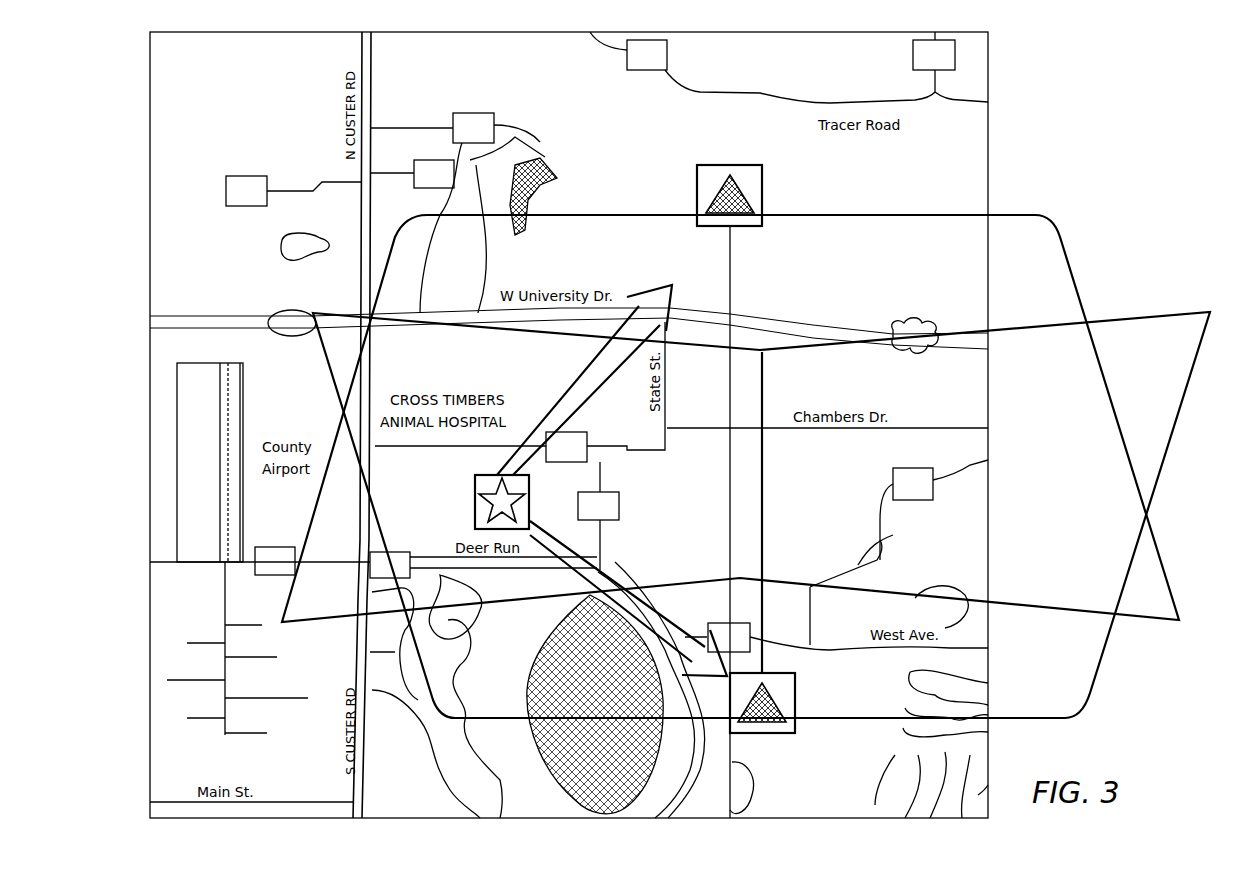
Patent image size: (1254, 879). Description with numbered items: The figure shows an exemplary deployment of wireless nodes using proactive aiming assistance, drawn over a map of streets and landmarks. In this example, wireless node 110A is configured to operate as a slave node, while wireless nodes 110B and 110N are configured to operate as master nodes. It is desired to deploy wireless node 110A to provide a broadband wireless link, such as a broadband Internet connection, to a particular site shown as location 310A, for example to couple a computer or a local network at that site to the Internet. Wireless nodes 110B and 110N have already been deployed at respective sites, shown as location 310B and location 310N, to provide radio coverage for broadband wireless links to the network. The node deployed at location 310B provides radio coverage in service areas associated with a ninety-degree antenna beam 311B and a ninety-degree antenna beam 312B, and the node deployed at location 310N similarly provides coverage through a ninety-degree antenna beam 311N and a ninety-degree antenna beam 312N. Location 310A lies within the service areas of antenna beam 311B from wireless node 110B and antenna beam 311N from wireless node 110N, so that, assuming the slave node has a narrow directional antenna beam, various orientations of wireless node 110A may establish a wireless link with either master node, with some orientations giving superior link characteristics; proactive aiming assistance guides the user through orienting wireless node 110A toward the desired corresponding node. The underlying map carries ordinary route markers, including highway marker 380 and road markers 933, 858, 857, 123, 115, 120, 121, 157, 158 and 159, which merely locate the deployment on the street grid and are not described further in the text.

The wireless node 110A is at (475, 487).
The wireless node 110B is at (740, 187).
The wireless node 110N is at (765, 683).
The location 310A is at (530, 477).
The location 310B is at (697, 182).
The location 310N is at (797, 702).
The 90° antenna beam 311B is at (580, 213).
The 90° antenna beam 311N is at (523, 719).
The 90° antenna beam 312B is at (962, 212).
The 90° antenna beam 312N is at (832, 720).
The highway 380 marker 380 is at (292, 323).
The road marker 933 is at (294, 191).
The road marker 858 is at (432, 128).
The road marker 857 is at (412, 174).
The road marker 123 is at (647, 55).
The road marker 115 is at (934, 55).
The road marker 120 is at (275, 561).
The road marker 121 is at (566, 447).
The road marker 157 is at (598, 506).
The road marker 158 is at (729, 637).
The road marker 159 is at (934, 510).